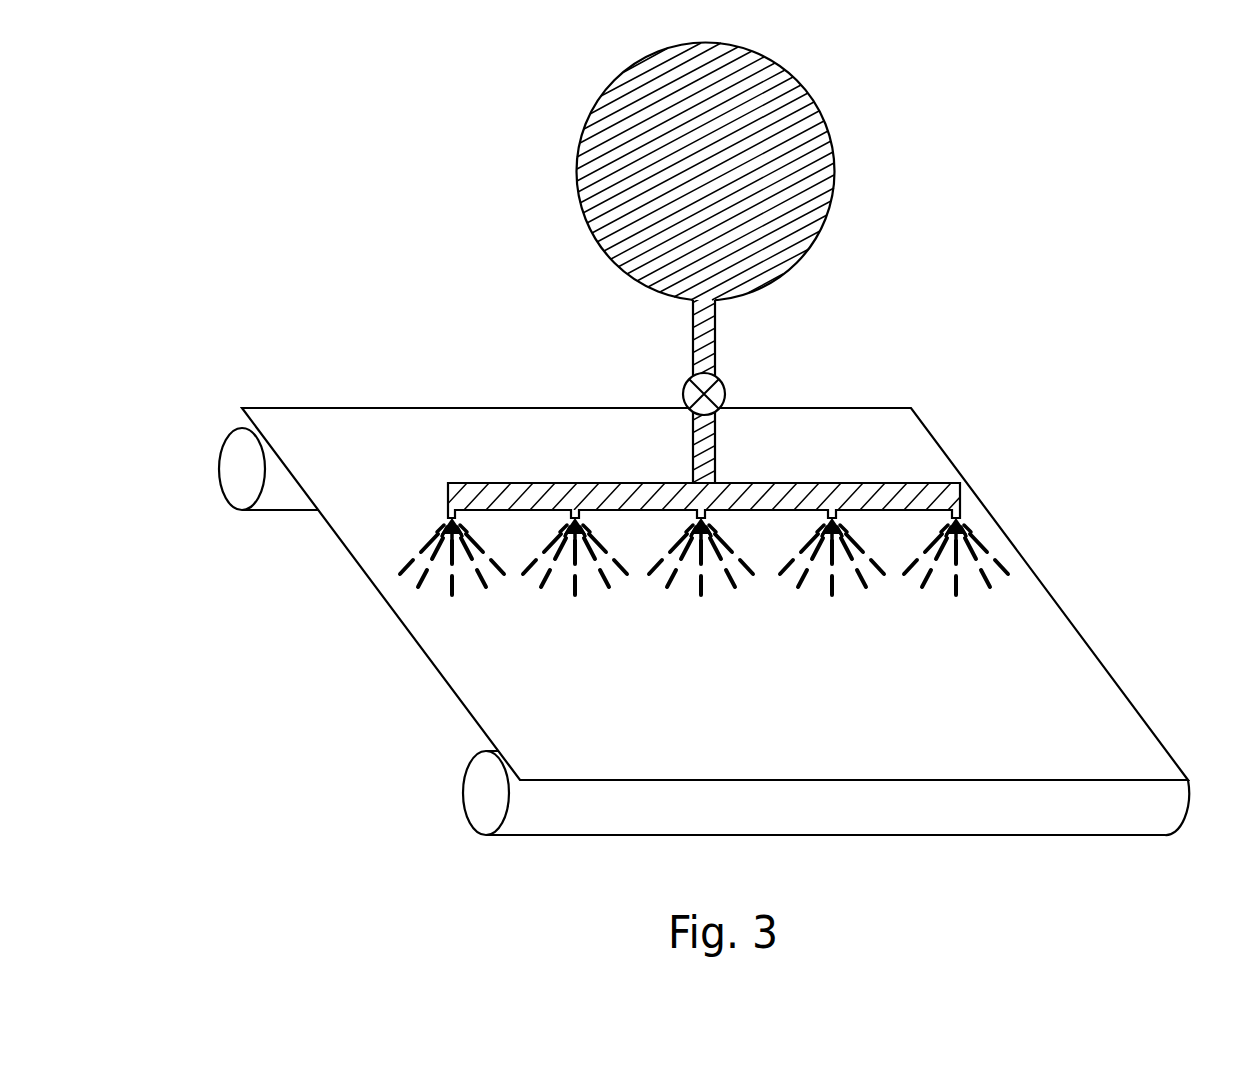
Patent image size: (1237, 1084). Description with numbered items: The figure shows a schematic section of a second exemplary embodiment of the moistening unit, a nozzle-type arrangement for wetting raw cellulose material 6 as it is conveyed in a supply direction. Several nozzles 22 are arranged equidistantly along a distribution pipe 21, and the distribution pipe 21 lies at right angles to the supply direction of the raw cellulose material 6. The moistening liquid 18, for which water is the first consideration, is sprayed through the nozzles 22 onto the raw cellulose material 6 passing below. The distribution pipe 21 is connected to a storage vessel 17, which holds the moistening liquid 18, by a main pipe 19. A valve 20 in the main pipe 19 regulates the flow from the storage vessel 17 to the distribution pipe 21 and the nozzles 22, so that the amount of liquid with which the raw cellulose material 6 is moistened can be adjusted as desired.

The raw cellulose material 6 is at (978, 653).
The storage vessel 17 is at (813, 105).
The moistening liquid 18 is at (767, 202).
The main pipe 19 is at (693, 340).
The valve 20 is at (722, 383).
The distribution pipe 21 is at (838, 483).
The nozzles 22 is at (962, 518).